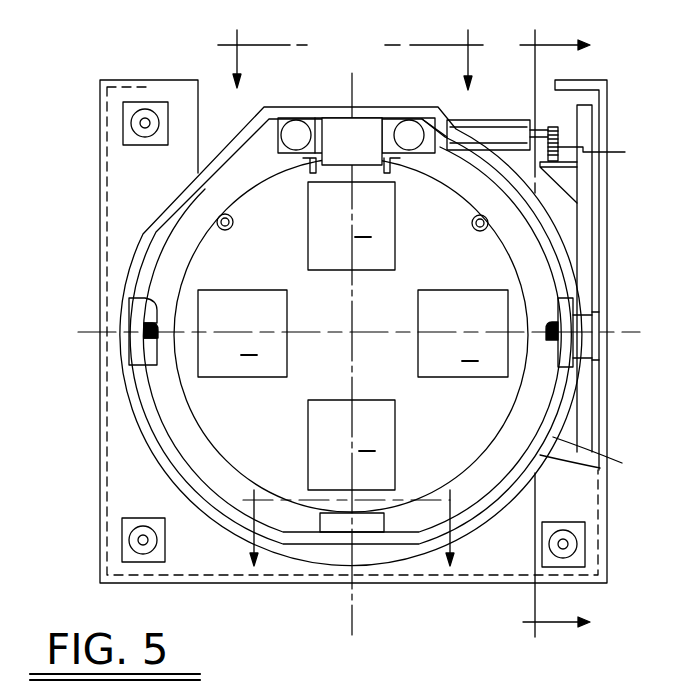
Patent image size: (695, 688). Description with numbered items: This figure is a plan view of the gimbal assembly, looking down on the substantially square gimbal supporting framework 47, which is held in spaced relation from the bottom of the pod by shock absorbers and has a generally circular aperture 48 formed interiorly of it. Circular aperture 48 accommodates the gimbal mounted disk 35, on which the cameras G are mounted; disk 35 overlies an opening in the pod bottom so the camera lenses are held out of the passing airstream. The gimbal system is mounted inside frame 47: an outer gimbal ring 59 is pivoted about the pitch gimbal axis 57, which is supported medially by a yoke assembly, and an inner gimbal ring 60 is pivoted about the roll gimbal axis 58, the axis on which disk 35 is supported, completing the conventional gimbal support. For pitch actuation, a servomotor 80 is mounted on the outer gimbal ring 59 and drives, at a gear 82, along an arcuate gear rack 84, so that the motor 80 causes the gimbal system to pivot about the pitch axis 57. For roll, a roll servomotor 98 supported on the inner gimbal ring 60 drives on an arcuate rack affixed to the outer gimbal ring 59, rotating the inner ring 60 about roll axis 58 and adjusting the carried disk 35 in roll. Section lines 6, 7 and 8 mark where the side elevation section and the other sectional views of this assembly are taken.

The gimbal mounted disk 35 is at (456, 240).
The gimbal supporting framework 47 is at (608, 203).
The circular aperture 48 is at (598, 459).
The pitch gimbal axis 57 is at (150, 300).
The roll gimbal axis 58 is at (337, 523).
The outer gimbal ring 59 is at (172, 210).
The inner gimbal ring 60 is at (521, 272).
The servomotor 80 is at (458, 130).
The gear 82 is at (564, 107).
The arcuate gear rack 84 is at (609, 153).
The roll servomotor 98 is at (294, 130).
The section line 6- 6 is at (565, 334).
The section line 7- 7 is at (351, 532).
The section line 8- 8 is at (353, 64).